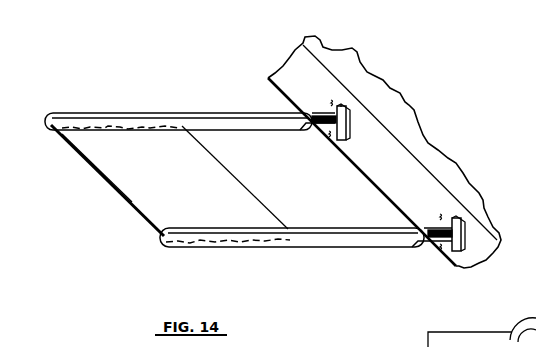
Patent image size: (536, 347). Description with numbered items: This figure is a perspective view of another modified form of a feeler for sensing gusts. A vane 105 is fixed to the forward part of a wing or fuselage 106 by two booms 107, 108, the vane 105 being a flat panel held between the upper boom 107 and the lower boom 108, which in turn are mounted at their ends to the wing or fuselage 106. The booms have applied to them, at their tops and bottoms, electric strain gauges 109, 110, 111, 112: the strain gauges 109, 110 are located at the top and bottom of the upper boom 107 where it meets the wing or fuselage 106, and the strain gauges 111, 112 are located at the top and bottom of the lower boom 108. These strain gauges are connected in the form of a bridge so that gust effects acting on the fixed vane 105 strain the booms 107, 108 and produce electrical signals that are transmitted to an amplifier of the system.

The vane 105 is at (137, 196).
The wing or fuselage 106 is at (393, 150).
The boom 107 is at (238, 113).
The boom 108 is at (366, 226).
The electric strain gauge 109 is at (328, 108).
The electric strain gauge 110 is at (328, 136).
The electric strain gauge 111 is at (436, 220).
The electric strain gauge 112 is at (436, 253).